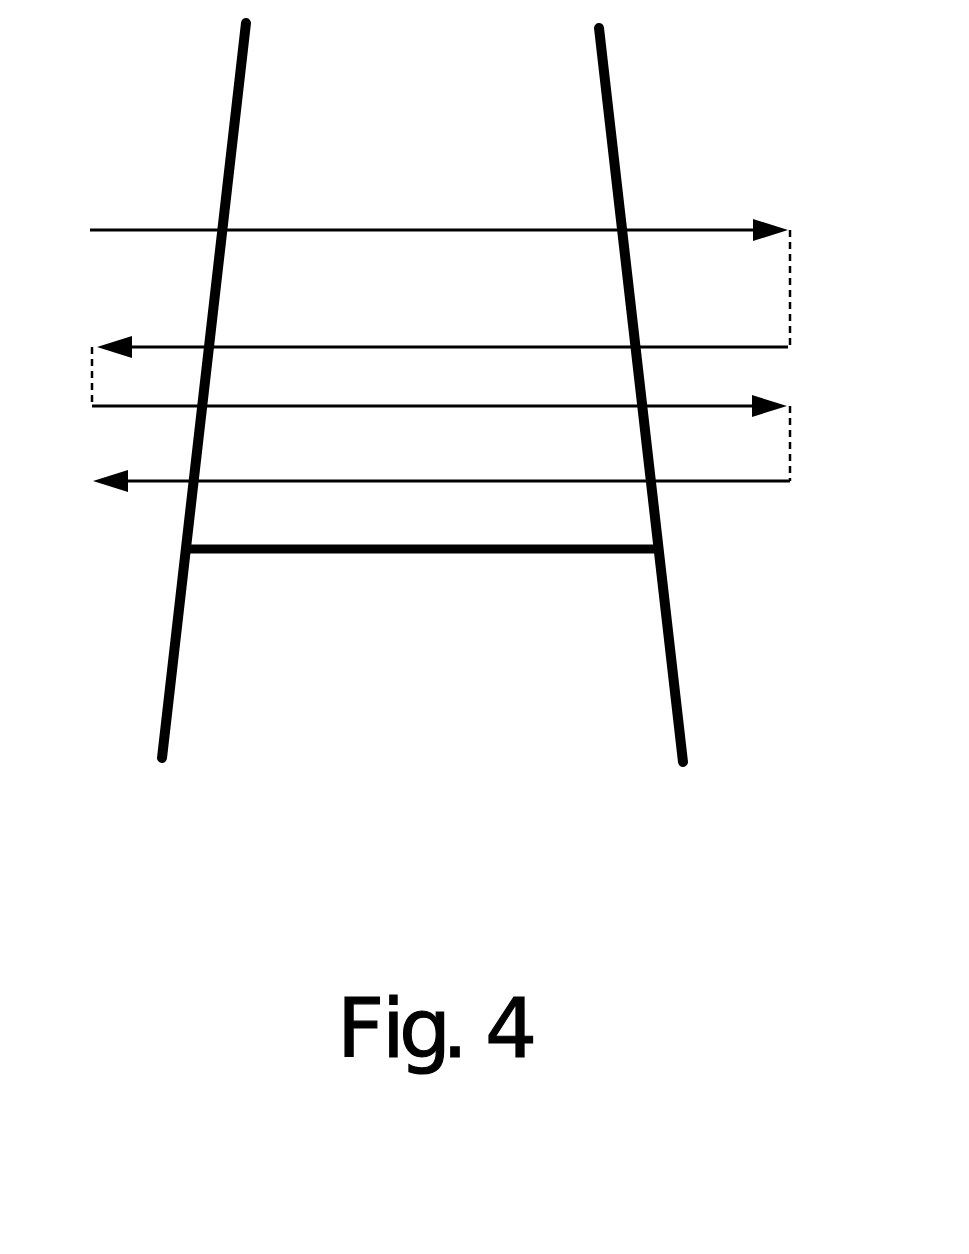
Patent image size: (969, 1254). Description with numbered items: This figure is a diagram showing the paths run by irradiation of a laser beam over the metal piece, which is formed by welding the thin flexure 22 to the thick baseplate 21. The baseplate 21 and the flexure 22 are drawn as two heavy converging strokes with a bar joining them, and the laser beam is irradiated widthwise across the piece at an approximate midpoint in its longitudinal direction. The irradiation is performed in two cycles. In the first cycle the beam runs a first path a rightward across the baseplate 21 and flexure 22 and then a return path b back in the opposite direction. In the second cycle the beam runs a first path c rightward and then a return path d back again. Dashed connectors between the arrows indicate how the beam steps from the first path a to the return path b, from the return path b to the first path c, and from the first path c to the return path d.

The baseplate 21 is at (273, 703).
The flexure 22 is at (550, 118).
The first path a is at (440, 259).
The return path b is at (440, 350).
The first path c is at (441, 420).
The return path d is at (441, 464).